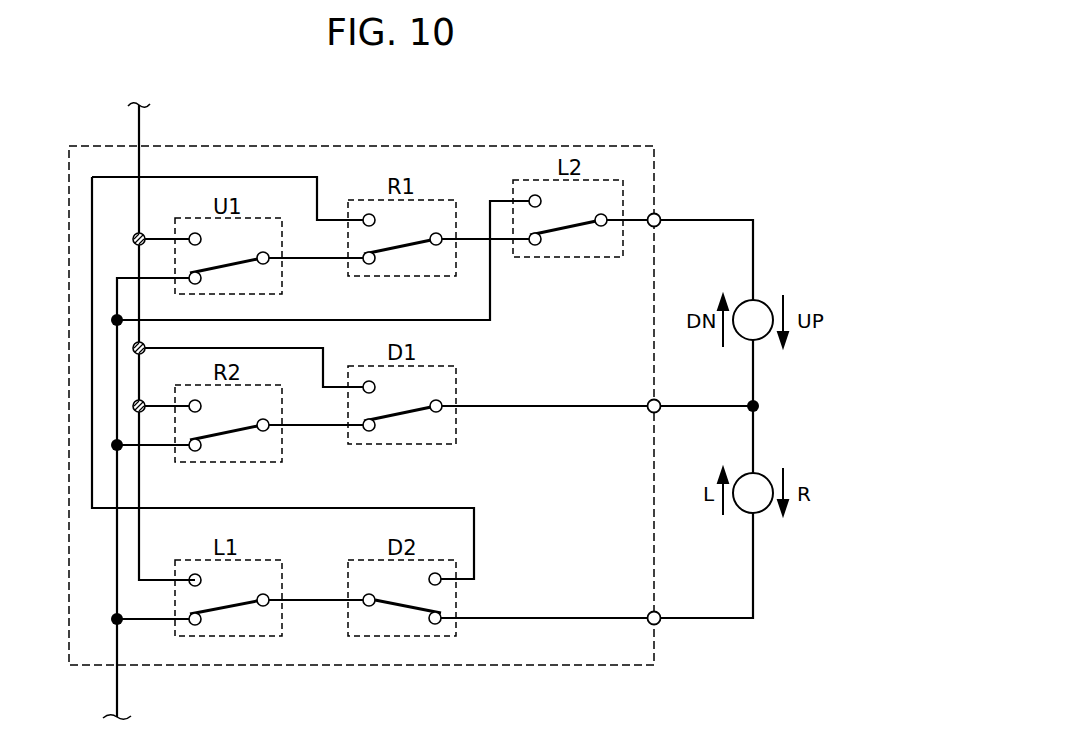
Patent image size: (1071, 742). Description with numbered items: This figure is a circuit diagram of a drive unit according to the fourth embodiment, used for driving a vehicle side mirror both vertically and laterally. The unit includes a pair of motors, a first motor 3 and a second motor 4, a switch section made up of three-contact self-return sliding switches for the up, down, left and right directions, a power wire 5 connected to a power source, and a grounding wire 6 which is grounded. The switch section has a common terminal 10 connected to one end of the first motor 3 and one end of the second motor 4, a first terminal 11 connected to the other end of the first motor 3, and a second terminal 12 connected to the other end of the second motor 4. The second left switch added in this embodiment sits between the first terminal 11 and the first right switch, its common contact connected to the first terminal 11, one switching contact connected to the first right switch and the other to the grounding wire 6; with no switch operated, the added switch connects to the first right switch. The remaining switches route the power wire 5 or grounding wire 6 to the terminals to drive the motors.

The first motor 3 is at (758, 303).
The second motor 4 is at (758, 475).
The power wire 5 is at (139, 120).
The grounding wire 6 is at (117, 688).
The common terminal 10 is at (648, 400).
The first terminal 11 is at (660, 213).
The second terminal 12 is at (658, 623).